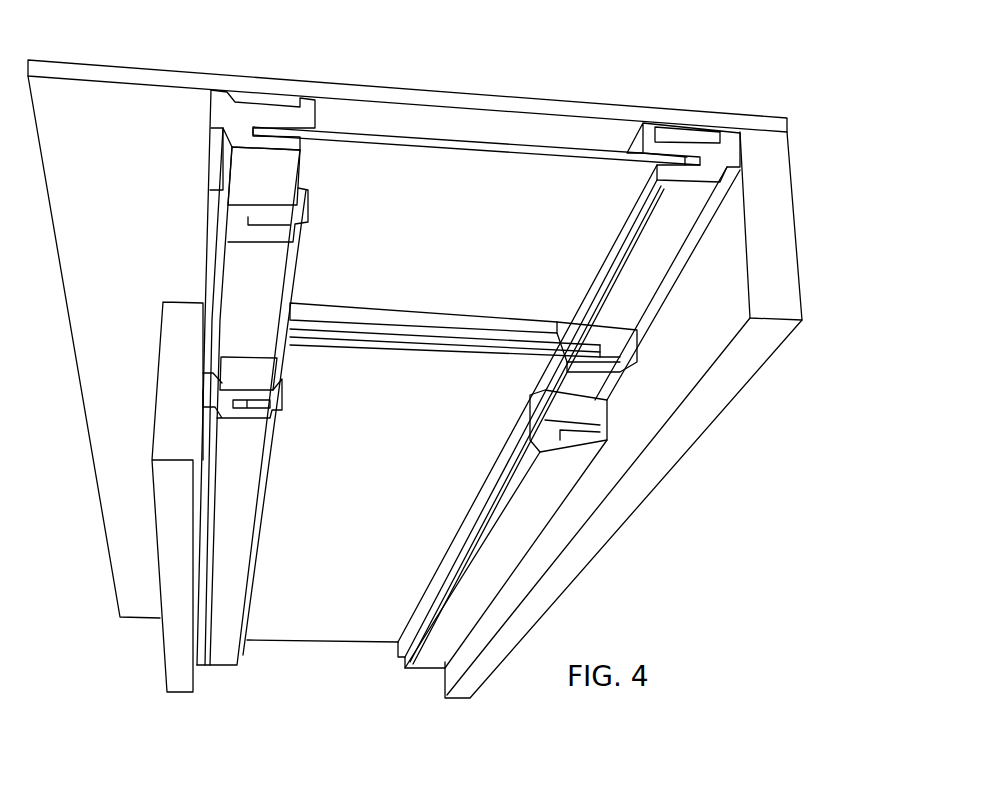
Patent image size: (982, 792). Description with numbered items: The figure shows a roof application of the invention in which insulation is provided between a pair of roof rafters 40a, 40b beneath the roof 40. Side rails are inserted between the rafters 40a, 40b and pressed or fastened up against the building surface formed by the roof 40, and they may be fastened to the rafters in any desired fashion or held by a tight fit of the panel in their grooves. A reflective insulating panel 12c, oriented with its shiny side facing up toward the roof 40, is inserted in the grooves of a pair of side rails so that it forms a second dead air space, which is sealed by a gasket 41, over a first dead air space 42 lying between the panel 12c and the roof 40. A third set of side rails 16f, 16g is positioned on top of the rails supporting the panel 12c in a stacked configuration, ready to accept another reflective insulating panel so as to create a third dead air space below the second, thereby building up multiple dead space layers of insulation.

The roof 40 is at (583, 103).
The roof rafter 40a is at (163, 642).
The roof rafter 40b is at (802, 222).
The gasket 41 is at (407, 328).
The first dead air space 42 is at (484, 129).
The reflective insulating panel 12c is at (352, 553).
The side rail 16f is at (480, 552).
The side rail 16g is at (222, 667).